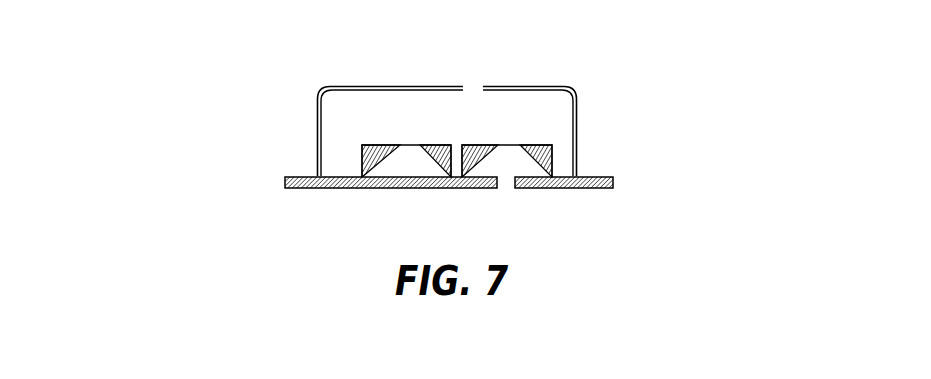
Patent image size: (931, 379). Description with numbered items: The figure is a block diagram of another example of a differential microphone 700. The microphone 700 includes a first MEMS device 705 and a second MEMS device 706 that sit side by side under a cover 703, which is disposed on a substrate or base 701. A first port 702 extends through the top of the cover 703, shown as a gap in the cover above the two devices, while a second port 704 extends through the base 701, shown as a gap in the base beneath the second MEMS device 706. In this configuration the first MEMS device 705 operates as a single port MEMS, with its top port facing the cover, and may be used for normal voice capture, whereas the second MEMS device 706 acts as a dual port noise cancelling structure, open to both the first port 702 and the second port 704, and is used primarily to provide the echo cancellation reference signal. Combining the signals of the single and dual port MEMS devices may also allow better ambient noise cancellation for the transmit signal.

The microphone 700 is at (421, 148).
The base 701 is at (408, 189).
The first port 702 is at (474, 86).
The cover 703 is at (380, 86).
The second port 704 is at (507, 188).
The first MEMS device 705 is at (408, 144).
The second MEMS device 706 is at (516, 145).